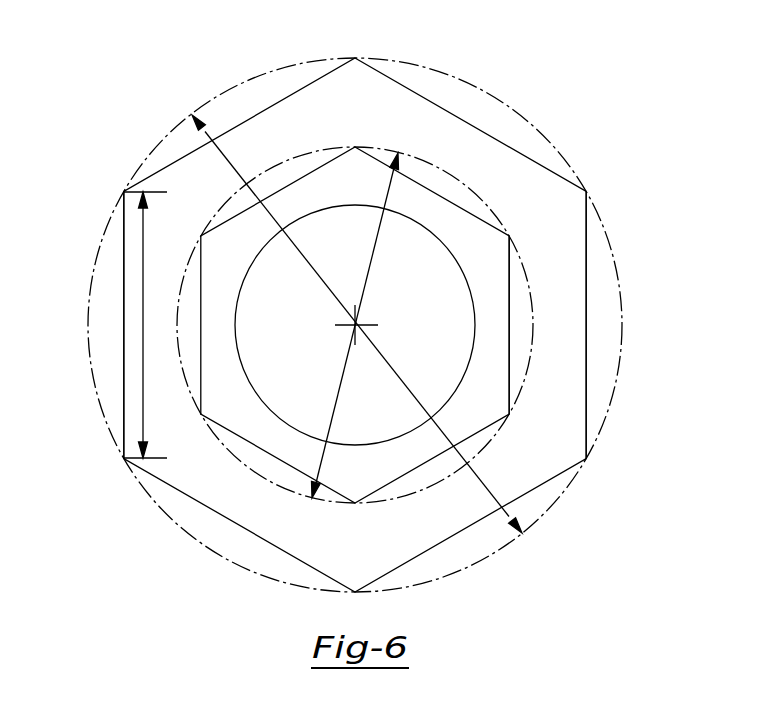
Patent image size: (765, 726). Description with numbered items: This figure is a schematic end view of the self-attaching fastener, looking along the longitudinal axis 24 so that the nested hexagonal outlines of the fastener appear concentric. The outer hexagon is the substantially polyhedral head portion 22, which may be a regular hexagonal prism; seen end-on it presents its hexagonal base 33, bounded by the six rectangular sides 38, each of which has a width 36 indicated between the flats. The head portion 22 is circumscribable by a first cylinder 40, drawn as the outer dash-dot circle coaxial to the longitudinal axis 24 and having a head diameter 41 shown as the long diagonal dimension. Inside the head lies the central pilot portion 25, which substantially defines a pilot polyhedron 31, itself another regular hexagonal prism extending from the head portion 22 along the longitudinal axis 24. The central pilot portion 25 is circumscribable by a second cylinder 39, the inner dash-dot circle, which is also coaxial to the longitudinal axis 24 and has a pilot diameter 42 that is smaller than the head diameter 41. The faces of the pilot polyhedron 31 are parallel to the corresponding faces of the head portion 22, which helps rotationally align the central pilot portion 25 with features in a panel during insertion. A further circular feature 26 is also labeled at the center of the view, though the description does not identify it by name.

The head portion 22 is at (587, 303).
The longitudinal axis 24 is at (358, 322).
The central pilot portion 25 is at (512, 300).
The central bore 26 is at (252, 395).
The pilot polyhedron 31 is at (512, 337).
The hexagonal base 33 is at (407, 85).
The width 36 is at (143, 259).
The rectangular sides 38 is at (123, 325).
The second cylinder 39 is at (528, 382).
The first cylinder 40 is at (622, 330).
The head diameter 41 is at (227, 167).
The pilot diameter 42 is at (377, 243).